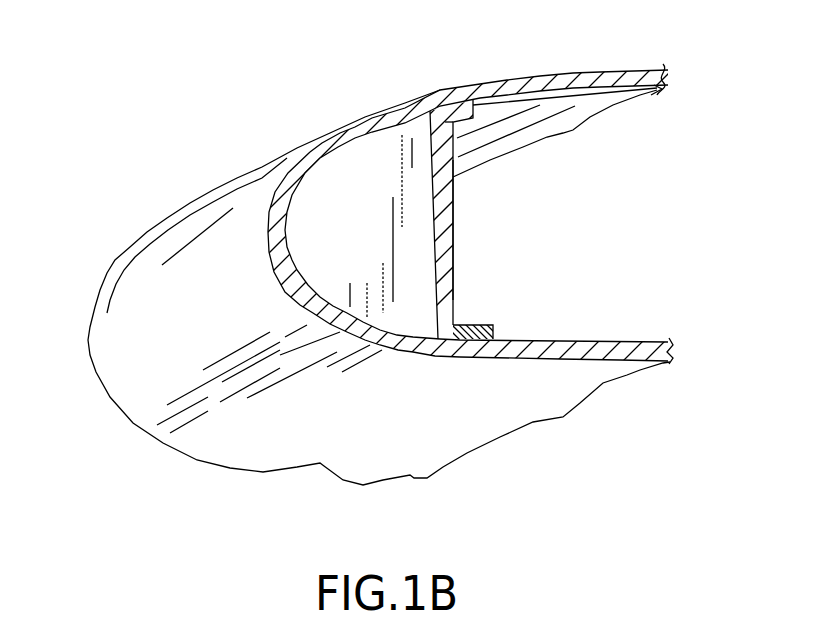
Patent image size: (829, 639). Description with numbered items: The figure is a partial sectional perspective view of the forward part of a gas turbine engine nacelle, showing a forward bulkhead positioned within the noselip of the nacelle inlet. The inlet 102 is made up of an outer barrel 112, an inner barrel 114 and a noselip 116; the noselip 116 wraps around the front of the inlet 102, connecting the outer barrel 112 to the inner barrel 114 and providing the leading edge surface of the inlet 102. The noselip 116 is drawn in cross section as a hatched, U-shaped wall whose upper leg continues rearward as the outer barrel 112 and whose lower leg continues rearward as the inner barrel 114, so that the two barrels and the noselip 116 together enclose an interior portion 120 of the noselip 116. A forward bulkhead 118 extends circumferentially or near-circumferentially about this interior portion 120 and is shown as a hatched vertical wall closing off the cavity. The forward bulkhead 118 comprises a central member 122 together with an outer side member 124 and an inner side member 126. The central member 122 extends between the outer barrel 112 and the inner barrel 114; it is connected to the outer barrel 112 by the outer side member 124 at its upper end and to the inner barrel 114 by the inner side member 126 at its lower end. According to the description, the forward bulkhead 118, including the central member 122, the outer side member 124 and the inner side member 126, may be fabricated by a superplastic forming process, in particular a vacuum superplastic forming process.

The inlet 102 is at (414, 228).
The outer barrel 112 is at (544, 78).
The inner barrel 114 is at (617, 361).
The noselip 116 is at (327, 139).
The forward bulkhead 118 is at (451, 228).
The interior portion 120 is at (291, 204).
The central member 122 is at (452, 267).
The outer side member 124 is at (467, 113).
The inner side member 126 is at (489, 328).